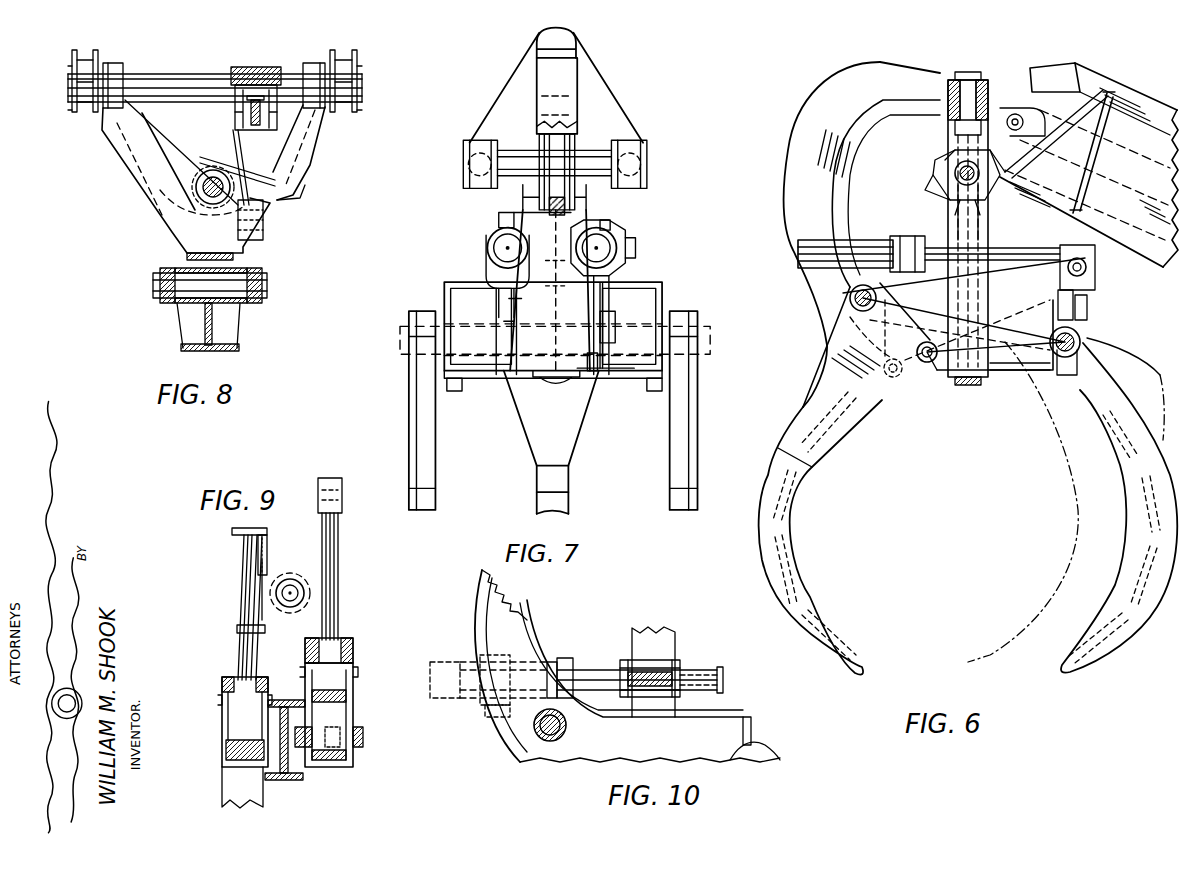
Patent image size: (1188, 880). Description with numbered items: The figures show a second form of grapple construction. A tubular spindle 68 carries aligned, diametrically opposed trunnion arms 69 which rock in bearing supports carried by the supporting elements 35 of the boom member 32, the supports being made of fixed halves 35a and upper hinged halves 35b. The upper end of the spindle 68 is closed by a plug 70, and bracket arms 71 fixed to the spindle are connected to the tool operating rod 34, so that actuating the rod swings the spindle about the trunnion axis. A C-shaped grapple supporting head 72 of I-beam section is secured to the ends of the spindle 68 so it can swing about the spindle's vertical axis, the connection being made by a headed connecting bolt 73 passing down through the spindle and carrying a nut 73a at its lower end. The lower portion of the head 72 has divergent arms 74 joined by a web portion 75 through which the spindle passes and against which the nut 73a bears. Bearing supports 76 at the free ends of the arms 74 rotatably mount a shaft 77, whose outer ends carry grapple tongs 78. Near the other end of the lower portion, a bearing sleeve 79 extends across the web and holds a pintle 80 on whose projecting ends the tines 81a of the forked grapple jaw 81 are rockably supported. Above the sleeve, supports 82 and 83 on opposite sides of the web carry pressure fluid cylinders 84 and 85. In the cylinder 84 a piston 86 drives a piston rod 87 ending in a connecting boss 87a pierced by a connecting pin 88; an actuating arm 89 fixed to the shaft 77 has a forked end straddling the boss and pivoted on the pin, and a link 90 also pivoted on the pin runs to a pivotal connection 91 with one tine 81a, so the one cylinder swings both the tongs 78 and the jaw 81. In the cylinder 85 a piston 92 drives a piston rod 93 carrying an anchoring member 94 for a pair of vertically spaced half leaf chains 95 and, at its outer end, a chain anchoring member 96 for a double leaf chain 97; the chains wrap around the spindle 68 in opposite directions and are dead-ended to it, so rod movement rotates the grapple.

In FIG. 7, the boom member 32 is at (568, 88).
In FIG. 6, the boom member 32 is at (1148, 192).
In FIG. 6, the tool operating rod 34 is at (1145, 172).
In FIG. 7, the supporting elements 35 is at (554, 162).
In FIG. 6, the supporting elements 35 is at (1000, 210).
In FIG. 7, the fixed halves 35a is at (452, 140).
In FIG. 6, the fixed halves 35a is at (938, 188).
In FIG. 7, the upper hinged halves 35b is at (460, 115).
In FIG. 6, the upper hinged halves 35b is at (950, 158).
In FIG. 8, the tubular spindle 68 is at (228, 210).
In FIG. 7, the tubular spindle 68 is at (538, 118).
In FIG. 6, the tubular spindle 68 is at (950, 226).
In FIG. 10, the tubular spindle 68 is at (675, 642).
In FIG. 7, the trunnion arms 69 is at (552, 193).
In FIG. 6, the trunnion arms 69 is at (952, 196).
In FIG. 6, the plug 70 is at (1000, 108).
In FIG. 6, the bracket arms 71 is at (1022, 168).
In FIG. 8, the C-shaped grapple supporting head 72 is at (240, 347).
In FIG. 7, the C-shaped grapple supporting head 72 is at (582, 326).
In FIG. 6, the C-shaped grapple supporting head 72 is at (825, 82).
In FIG. 9, the C-shaped grapple supporting head 72 is at (312, 787).
In FIG. 8, the headed connecting bolt 73 is at (163, 208).
In FIG. 6, the headed connecting bolt 73 is at (978, 80).
In FIG. 7, the nut 73a is at (515, 305).
In FIG. 6, the nut 73a is at (972, 385).
In FIG. 8, the divergent arms 74 is at (128, 180).
In FIG. 8, the web portion 75 is at (208, 165).
In FIG. 7, the web portion 75 is at (605, 387).
In FIG. 6, the web portion 75 is at (1015, 398).
In FIG. 8, the bearing supports 76 is at (113, 63).
In FIG. 7, the bearing supports 76 is at (554, 399).
In FIG. 6, the bearing supports 76 is at (1087, 318).
In FIG. 10, the bearing supports 76 is at (758, 732).
In FIG. 8, the shaft 77 is at (152, 76).
In FIG. 7, the shaft 77 is at (567, 339).
In FIG. 6, the shaft 77 is at (1082, 342).
In FIG. 8, the grapple tongs 78 is at (72, 92).
In FIG. 7, the grapple tongs 78 is at (428, 388).
In FIG. 6, the grapple tongs 78 is at (1150, 438).
In FIG. 8, the bearing sleeve 79 is at (188, 312).
In FIG. 7, the bearing sleeve 79 is at (491, 307).
In FIG. 10, the bearing sleeve 79 is at (562, 735).
In FIG. 8, the pintle 80 is at (153, 284).
In FIG. 7, the pintle 80 is at (626, 313).
In FIG. 6, the pintle 80 is at (850, 292).
In FIG. 10, the pintle 80 is at (566, 725).
In FIG. 7, the grapple jaw 81 is at (568, 490).
In FIG. 6, the grapple jaw 81 is at (798, 518).
In FIG. 8, the tines 81a is at (165, 268).
In FIG. 7, the tines 81a is at (533, 438).
In FIG. 7, the support 82 is at (578, 208).
In FIG. 9, the support 82 is at (340, 763).
In FIG. 7, the support 83 is at (490, 250).
In FIG. 9, the support 83 is at (272, 780).
In FIG. 10, the support 83 is at (498, 722).
In FIG. 7, the pressure fluid cylinder 84 is at (619, 245).
In FIG. 6, the pressure fluid cylinder 84 is at (845, 240).
In FIG. 9, the pressure fluid cylinder 84 is at (352, 712).
In FIG. 7, the pressure fluid cylinder 85 is at (484, 315).
In FIG. 9, the pressure fluid cylinder 85 is at (222, 782).
In FIG. 9, the piston 86 is at (350, 690).
In FIG. 8, the piston rod 87 is at (258, 67).
In FIG. 6, the piston rod 87 is at (1020, 260).
In FIG. 9, the piston rod 87 is at (338, 575).
In FIG. 6, the connecting boss 87a is at (1078, 258).
In FIG. 9, the connecting boss 87a is at (342, 484).
In FIG. 8, the connecting pin 88 is at (232, 71).
In FIG. 6, the connecting pin 88 is at (1092, 248).
In FIG. 8, the actuating arm 89 is at (240, 67).
In FIG. 6, the actuating arm 89 is at (1073, 300).
In FIG. 8, the link 90 is at (298, 188).
In FIG. 7, the link 90 is at (653, 316).
In FIG. 6, the link 90 is at (948, 318).
In FIG. 8, the pivotal connection 91 is at (263, 222).
In FIG. 7, the pivotal connection 91 is at (611, 368).
In FIG. 6, the pivotal connection 91 is at (935, 378).
In FIG. 9, the piston 92 is at (226, 757).
In FIG. 9, the piston rod 93 is at (240, 654).
In FIG. 10, the piston rod 93 is at (588, 668).
In FIG. 9, the anchoring member 94 is at (237, 627).
In FIG. 10, the anchoring member 94 is at (615, 682).
In FIG. 9, the half leaf chains 95 is at (268, 625).
In FIG. 10, the half leaf chains 95 is at (665, 697).
In FIG. 9, the chain anchoring member 96 is at (232, 532).
In FIG. 10, the chain anchoring member 96 is at (722, 667).
In FIG. 9, the double leaf chain 97 is at (258, 550).
In FIG. 10, the double leaf chain 97 is at (685, 694).